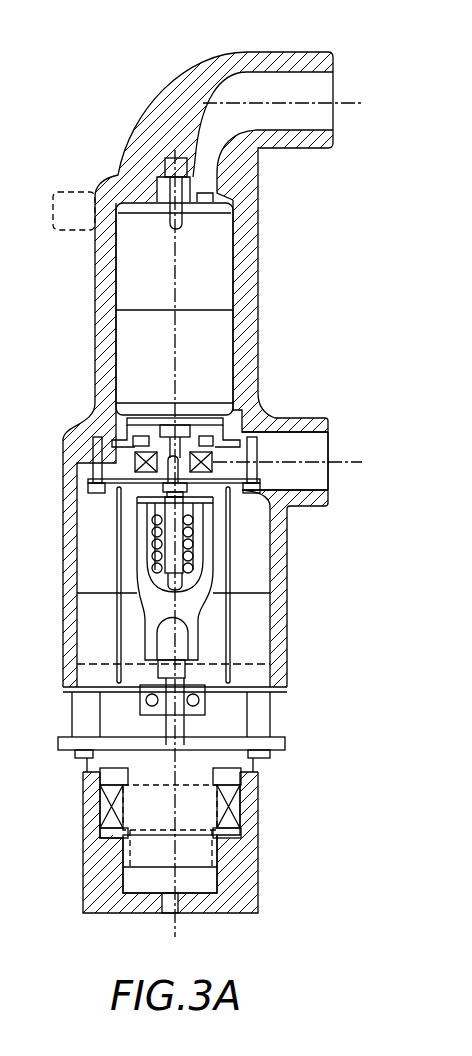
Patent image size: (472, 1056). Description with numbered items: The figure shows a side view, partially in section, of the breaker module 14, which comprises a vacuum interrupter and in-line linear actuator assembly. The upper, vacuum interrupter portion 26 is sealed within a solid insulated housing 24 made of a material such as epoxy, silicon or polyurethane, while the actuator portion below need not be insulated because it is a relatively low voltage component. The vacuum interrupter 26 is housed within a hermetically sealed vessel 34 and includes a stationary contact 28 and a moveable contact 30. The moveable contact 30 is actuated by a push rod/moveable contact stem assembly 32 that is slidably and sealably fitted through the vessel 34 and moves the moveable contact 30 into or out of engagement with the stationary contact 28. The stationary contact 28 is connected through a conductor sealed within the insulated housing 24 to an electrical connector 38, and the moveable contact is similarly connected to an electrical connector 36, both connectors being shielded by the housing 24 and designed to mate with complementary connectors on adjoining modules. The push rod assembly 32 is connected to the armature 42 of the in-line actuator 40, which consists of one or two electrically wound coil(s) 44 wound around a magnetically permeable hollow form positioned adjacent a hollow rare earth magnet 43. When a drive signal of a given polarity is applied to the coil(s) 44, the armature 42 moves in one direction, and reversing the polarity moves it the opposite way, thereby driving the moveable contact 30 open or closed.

The breaker module 14 is at (283, 312).
The insulated housing 24 is at (197, 73).
The vacuum interrupter 26 is at (213, 258).
The stationary contact 28 is at (203, 217).
The moveable contact 30 is at (210, 407).
The push rod/moveable contact stem assembly 32 is at (192, 618).
The hermetically sealed vessel 34 is at (116, 335).
The electrical connector 36 is at (313, 452).
The electrical connector 38 is at (317, 85).
The in-line actuator 40 is at (220, 848).
The armature 42 is at (175, 730).
The rare earth magnet 43 is at (205, 860).
The in-line actuator coil(s) 44 is at (257, 792).